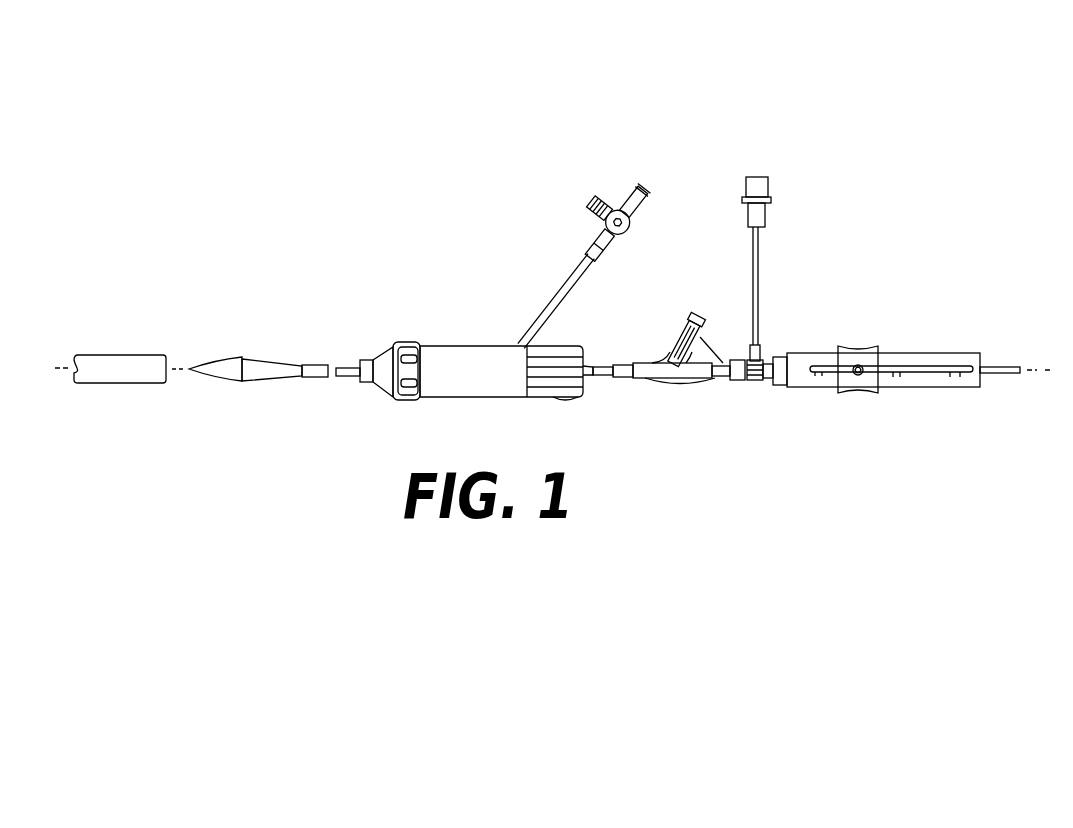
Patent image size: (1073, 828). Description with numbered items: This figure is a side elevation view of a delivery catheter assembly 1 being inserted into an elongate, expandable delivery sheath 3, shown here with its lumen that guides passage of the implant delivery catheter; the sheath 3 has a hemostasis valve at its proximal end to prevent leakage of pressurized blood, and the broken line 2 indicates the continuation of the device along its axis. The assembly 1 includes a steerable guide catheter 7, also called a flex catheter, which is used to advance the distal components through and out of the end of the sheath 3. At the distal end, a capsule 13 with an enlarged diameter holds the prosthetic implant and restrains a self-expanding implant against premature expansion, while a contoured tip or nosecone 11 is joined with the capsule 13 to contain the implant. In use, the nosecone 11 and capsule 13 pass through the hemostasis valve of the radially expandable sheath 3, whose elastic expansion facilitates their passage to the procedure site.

The delivery catheter assembly 1 is at (701, 118).
The catheter 2 is at (57, 370).
The delivery sheath 3 is at (121, 366).
The steerable guide catheter 7 is at (320, 365).
The nosecone 11 is at (240, 353).
The capsule 13 is at (258, 374).